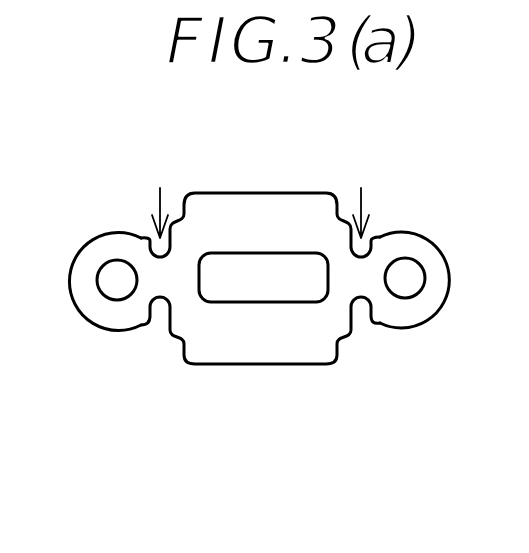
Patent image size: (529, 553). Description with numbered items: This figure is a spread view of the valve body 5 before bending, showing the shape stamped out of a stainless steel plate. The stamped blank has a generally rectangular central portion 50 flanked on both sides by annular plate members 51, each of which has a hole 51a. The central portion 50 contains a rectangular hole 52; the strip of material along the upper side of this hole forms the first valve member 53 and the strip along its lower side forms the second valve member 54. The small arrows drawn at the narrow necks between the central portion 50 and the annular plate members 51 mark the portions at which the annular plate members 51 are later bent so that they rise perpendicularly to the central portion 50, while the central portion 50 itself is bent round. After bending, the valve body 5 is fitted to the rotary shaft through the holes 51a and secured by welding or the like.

The valve body 5 is at (318, 172).
The central portion 50 is at (256, 398).
The annular plate members 51 is at (105, 310).
The holes 51a is at (408, 268).
The rectangular hole 52 is at (205, 295).
The first valve member 53 is at (248, 208).
The second valve member 54 is at (303, 350).